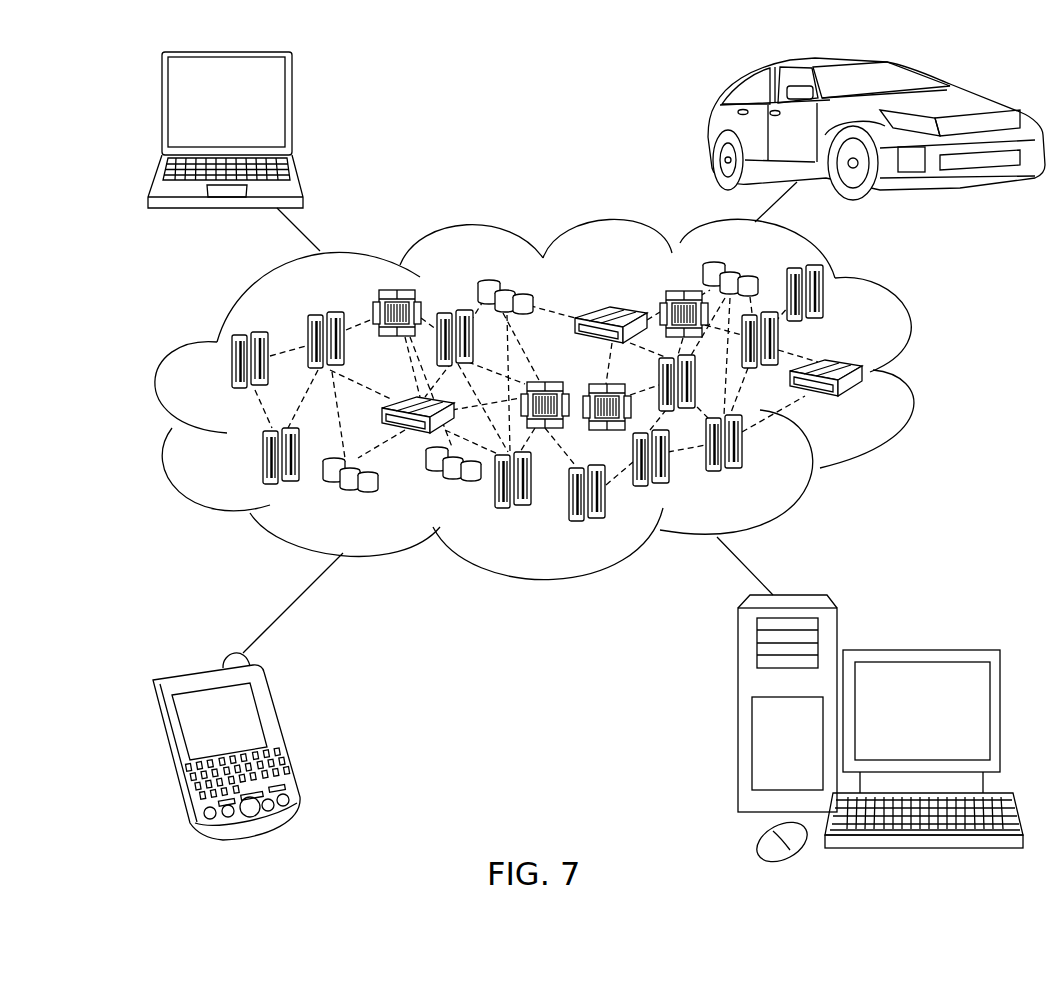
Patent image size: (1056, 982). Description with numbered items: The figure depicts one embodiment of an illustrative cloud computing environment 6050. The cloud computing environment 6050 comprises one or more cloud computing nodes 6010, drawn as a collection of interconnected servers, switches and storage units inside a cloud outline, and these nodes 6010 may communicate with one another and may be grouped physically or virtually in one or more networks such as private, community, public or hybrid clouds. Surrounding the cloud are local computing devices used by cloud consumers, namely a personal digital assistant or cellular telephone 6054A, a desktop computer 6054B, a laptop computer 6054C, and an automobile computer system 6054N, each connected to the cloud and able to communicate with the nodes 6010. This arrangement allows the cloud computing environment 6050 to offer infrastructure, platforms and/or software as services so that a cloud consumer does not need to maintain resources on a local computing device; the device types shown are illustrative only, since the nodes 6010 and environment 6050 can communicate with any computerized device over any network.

The cloud computing environment 6050 is at (918, 373).
The cloud computing nodes 6010 is at (867, 403).
The personal digital assistant or cellular telephone 6054A is at (282, 735).
The desktop computer 6054B is at (918, 650).
The laptop computer 6054C is at (292, 112).
The automobile computer system 6054N is at (710, 130).